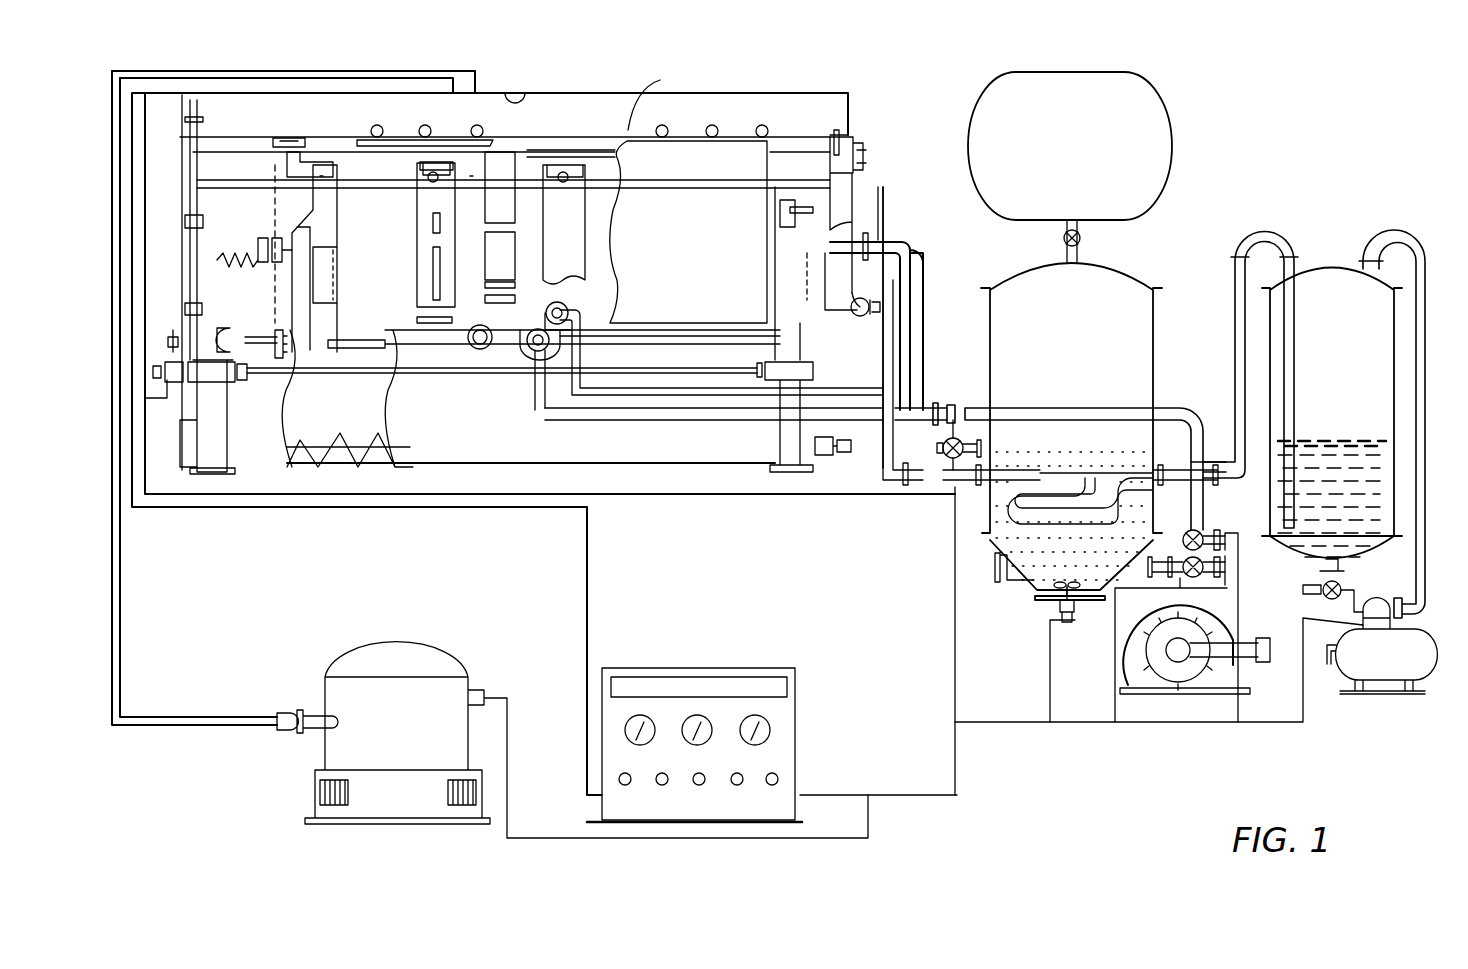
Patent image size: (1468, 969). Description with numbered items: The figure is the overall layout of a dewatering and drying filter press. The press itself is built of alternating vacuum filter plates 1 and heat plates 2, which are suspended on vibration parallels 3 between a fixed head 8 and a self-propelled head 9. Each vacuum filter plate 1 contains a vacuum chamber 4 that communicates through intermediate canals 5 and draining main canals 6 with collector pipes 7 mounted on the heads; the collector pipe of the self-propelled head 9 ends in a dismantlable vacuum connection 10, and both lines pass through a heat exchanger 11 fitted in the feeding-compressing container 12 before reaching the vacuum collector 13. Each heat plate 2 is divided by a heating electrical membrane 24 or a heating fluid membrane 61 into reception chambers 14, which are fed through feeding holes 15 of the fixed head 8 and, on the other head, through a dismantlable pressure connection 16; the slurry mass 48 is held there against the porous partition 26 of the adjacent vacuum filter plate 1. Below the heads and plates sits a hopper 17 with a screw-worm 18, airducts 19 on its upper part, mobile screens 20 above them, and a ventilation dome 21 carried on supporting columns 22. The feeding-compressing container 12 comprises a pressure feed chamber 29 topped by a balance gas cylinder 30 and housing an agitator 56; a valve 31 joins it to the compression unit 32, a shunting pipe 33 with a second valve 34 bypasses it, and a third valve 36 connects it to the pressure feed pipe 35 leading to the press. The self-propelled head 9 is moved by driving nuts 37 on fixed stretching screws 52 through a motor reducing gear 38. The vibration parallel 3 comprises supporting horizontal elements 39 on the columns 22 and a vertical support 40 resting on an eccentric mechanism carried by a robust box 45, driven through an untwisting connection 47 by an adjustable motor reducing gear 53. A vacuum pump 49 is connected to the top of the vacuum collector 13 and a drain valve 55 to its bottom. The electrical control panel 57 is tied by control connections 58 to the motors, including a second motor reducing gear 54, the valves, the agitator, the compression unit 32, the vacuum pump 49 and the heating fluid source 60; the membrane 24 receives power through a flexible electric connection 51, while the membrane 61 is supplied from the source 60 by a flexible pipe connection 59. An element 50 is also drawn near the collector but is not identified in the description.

The vacuum filter plate 1 is at (500, 150).
The heat plate 2 is at (430, 160).
The vibration parallel 3 is at (185, 222).
The vacuum chamber 4 is at (500, 210).
The intermediate canals 5 is at (500, 282).
The draining main canals 6 is at (500, 303).
The collector pipe 7 is at (330, 320).
The fixed head 8 is at (845, 200).
The self-propelled head 9 is at (305, 170).
The dismantlable vacuum connection 10 is at (570, 325).
The heat exchanger 11 is at (1005, 470).
The feeding-compressing container 12 is at (1118, 270).
The vacuum collector 13 is at (1348, 268).
The reception chambers 14 is at (440, 305).
The feeding holes 15 is at (312, 470).
The dismantlable pressure connection 16 is at (537, 350).
The hopper 17 is at (625, 465).
The screw-worm 18 is at (320, 470).
The airducts 19 is at (490, 348).
The mobile screens 20 is at (722, 150).
The ventilation dome 21 is at (790, 108).
The supporting columns 22 is at (212, 472).
The heating electrical membrane 24 is at (430, 270).
The porous partition 26 is at (500, 308).
The pressure feed chamber 29 is at (1148, 345).
The balance gas cylinder 30 is at (1127, 118).
The valve 31 is at (1205, 578).
The compression unit 32 is at (1178, 660).
The shunting pipe 33 is at (1160, 410).
The second valve 34 is at (1200, 532).
The pressure feed pipe 35 is at (688, 415).
The third valve 36 is at (946, 456).
The driving nuts 37 is at (290, 135).
The motor reducing gear 38 is at (185, 308).
The supporting horizontal elements 39 is at (654, 96).
The vertical support 40 is at (760, 310).
The robust box 45 is at (785, 380).
The untwisting connection 47 is at (718, 375).
The slurry mass 48 is at (1010, 470).
The vacuum pump 49 is at (1425, 672).
The pipe 50 is at (1290, 480).
The flexible electric connection 51 is at (585, 695).
The fixed stretching screws 52 is at (335, 150).
The adjustable motor reducing gear 53 is at (153, 372).
The second motor reducing gear 54 is at (848, 455).
The drain valve 55 is at (1305, 598).
The agitator 56 is at (1073, 635).
The electrical control panel 57 is at (785, 755).
The control connections 58 is at (840, 796).
The flexible pipe connection 59 is at (148, 717).
The heating fluid source 60 is at (390, 755).
The heating fluid membrane 61 is at (435, 220).